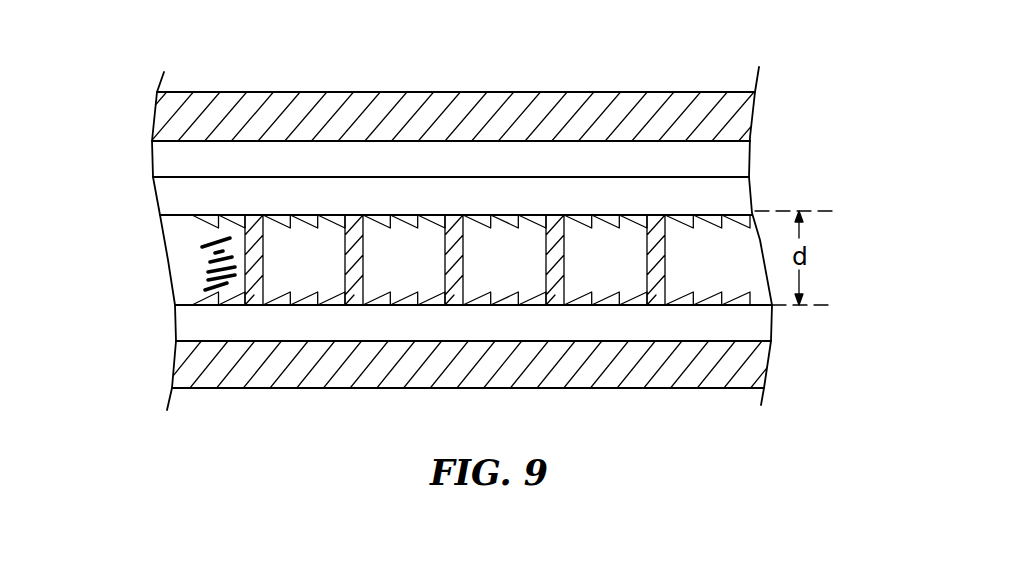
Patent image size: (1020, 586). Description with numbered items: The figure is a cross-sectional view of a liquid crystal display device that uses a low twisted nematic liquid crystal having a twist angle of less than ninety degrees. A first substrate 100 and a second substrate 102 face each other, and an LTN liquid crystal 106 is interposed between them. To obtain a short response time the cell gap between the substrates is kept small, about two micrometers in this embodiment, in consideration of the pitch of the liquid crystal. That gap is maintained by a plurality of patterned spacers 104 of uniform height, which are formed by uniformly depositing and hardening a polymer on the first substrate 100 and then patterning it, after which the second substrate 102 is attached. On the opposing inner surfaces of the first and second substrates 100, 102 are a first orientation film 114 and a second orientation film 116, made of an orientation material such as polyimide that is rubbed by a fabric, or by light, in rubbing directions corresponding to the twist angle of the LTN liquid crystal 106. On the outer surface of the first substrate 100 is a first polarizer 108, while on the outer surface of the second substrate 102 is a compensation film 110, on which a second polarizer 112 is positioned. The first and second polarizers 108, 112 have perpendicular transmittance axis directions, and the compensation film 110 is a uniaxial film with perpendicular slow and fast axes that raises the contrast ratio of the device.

The first substrate 100 is at (772, 327).
The second substrate 102 is at (720, 192).
The spacers 104 is at (558, 223).
The LTN liquid crystal 106 is at (204, 273).
The first polarizer 108 is at (762, 372).
The compensation film 110 is at (718, 155).
The second polarizer 112 is at (725, 112).
The first orientation film 114 is at (772, 305).
The second orientation film 116 is at (767, 213).